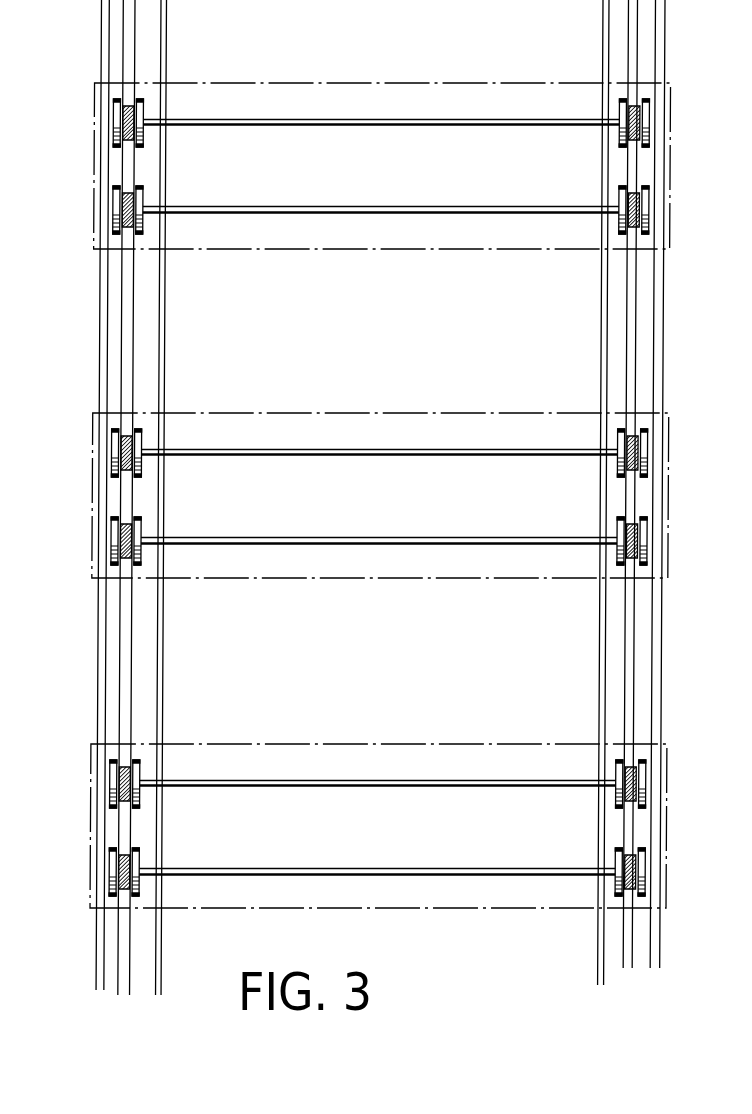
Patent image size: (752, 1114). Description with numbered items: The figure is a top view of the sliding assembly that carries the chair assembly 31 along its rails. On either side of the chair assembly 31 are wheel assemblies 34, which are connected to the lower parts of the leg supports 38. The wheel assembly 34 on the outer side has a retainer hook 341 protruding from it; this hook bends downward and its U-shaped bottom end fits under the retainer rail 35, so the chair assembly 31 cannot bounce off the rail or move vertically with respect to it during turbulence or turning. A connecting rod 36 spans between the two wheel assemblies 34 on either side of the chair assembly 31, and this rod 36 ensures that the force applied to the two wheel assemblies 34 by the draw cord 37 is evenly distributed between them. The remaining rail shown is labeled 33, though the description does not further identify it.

The chair assembly 31 is at (382, 88).
The inner guide rail 33 is at (127, 63).
The wheel assembly 34 is at (119, 139).
The retainer rail 35 is at (102, 603).
The connecting rod 36 is at (430, 126).
The draw cord 37 is at (166, 45).
The leg supports 38 is at (126, 200).
The retainer hook 341 is at (113, 560).